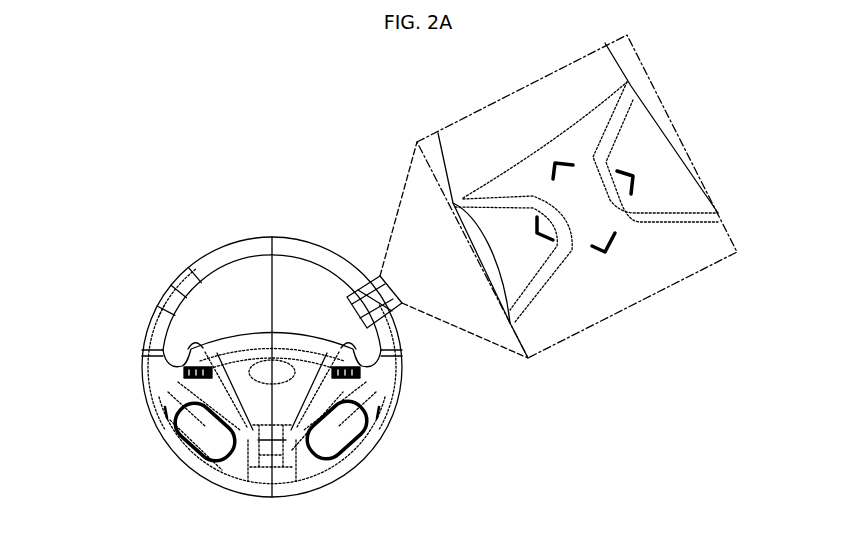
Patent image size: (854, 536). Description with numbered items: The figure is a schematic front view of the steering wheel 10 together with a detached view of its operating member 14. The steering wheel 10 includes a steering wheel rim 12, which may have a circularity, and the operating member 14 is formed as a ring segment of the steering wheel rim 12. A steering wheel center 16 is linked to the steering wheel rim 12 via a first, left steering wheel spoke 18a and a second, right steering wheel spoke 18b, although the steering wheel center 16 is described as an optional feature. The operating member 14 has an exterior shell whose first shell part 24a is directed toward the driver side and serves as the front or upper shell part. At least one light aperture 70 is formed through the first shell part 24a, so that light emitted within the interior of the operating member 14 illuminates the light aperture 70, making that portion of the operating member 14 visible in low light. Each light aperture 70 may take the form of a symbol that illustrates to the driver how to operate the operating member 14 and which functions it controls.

The steering wheel 10 is at (523, 422).
The steering wheel rim 12 is at (208, 267).
The operating member 14 is at (400, 345).
The steering wheel center 16 is at (258, 343).
The first steering wheel spoke 18a is at (152, 406).
The second steering wheel spoke 18b is at (395, 407).
The first shell part 24a is at (630, 283).
The light aperture 70 is at (564, 156).